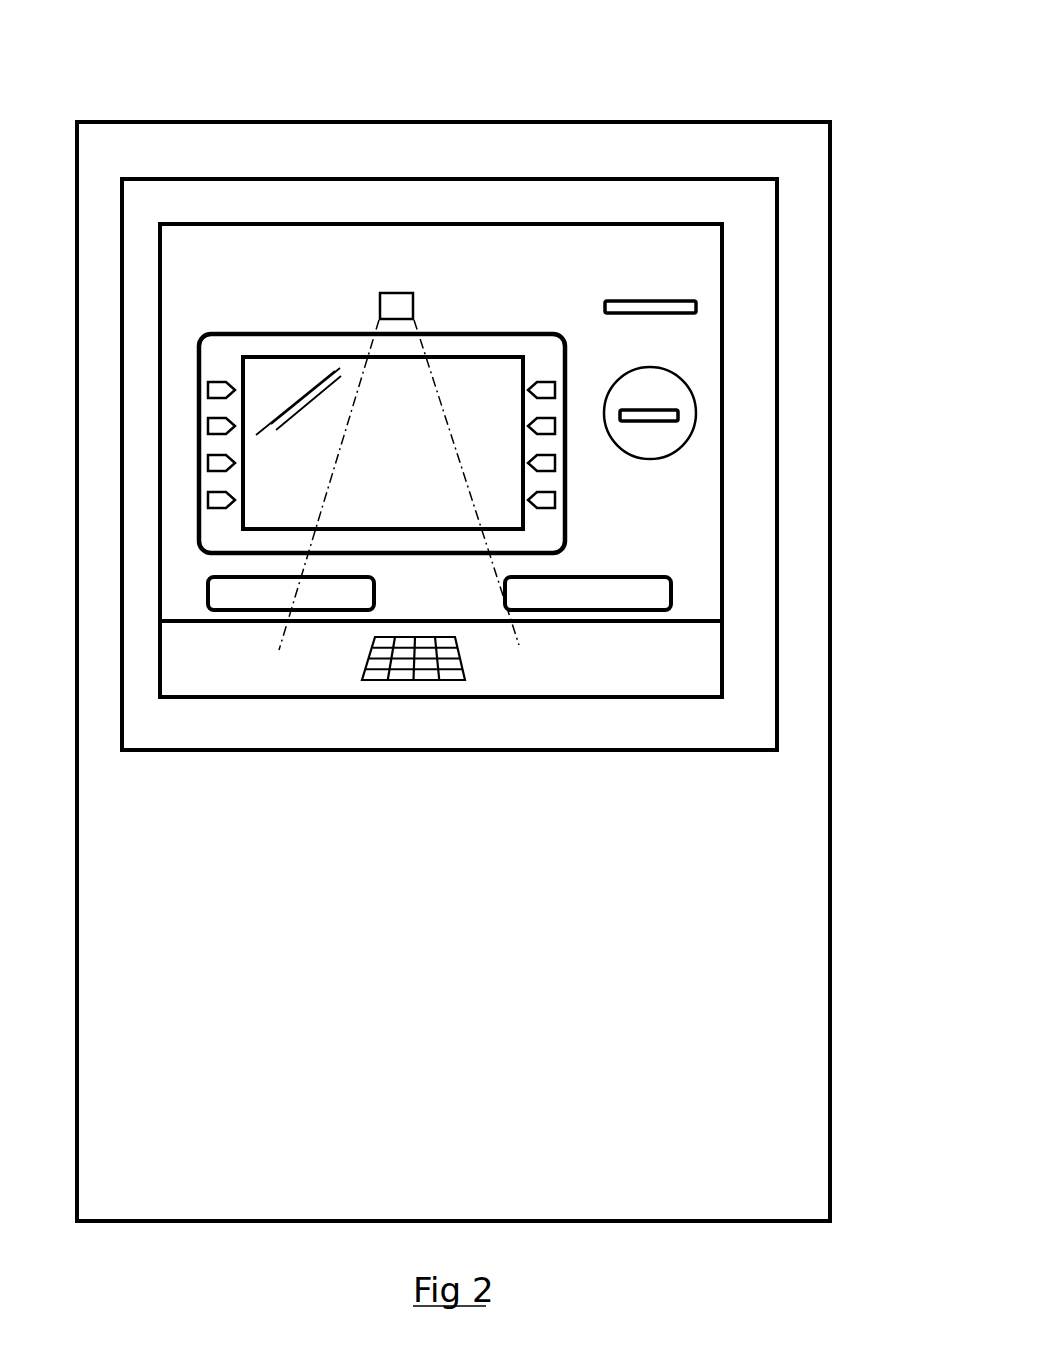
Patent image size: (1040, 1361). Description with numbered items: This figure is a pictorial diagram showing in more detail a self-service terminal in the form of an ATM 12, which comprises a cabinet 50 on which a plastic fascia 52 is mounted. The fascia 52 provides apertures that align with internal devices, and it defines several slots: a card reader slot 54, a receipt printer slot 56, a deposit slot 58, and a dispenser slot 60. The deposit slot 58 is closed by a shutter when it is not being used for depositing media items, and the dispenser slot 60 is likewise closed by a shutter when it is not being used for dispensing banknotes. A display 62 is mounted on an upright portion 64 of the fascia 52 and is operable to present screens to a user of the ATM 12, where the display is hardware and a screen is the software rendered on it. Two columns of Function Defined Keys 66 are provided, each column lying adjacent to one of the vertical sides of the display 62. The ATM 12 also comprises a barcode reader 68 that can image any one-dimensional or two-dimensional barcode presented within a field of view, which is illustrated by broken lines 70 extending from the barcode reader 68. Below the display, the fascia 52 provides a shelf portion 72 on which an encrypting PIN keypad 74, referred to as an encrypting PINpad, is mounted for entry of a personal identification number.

The ATM 12 is at (737, 78).
The cabinet 50 is at (832, 1188).
The fascia 52 is at (298, 215).
The card reader slot 54 is at (670, 408).
The receipt printer slot 56 is at (683, 302).
The deposit slot 58 is at (374, 587).
The dispenser slot 60 is at (586, 612).
The display 62 is at (275, 358).
The upright portion 64 is at (235, 308).
The Function Defined Keys 66 is at (183, 456).
The barcode reader 68 is at (413, 293).
The broken lines 70 is at (449, 432).
The shelf portion 72 is at (487, 660).
The encrypting PIN keypad 74 is at (416, 657).